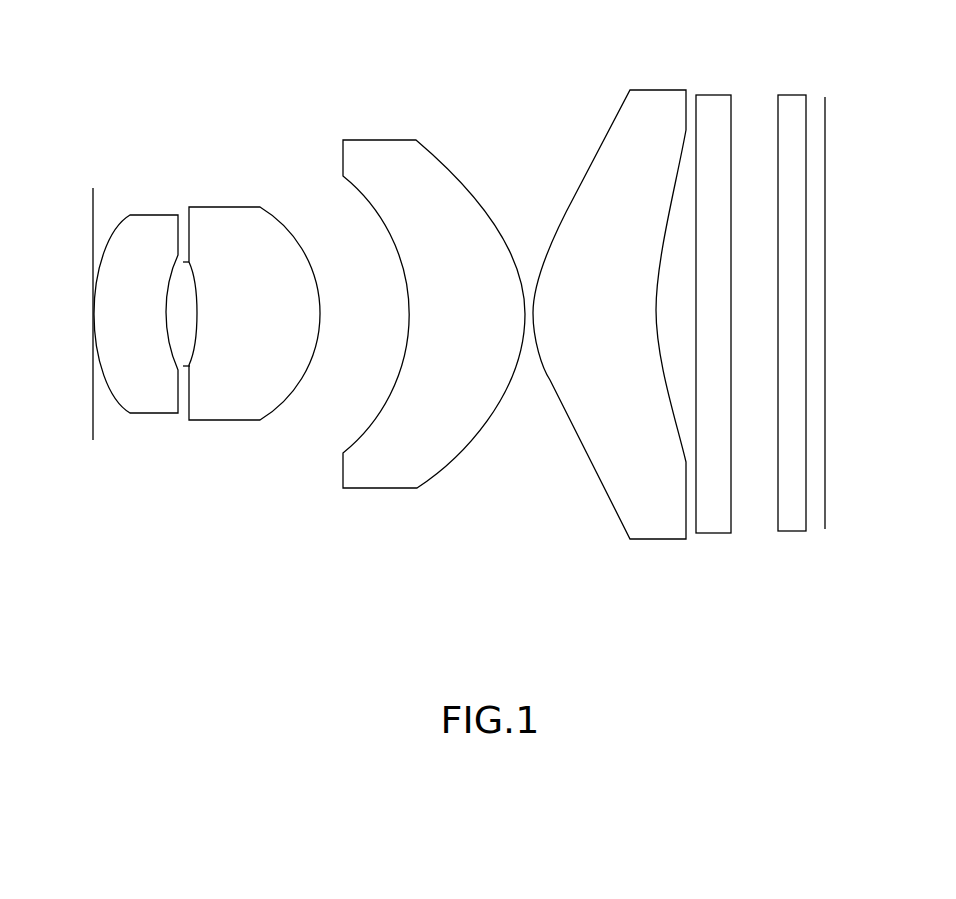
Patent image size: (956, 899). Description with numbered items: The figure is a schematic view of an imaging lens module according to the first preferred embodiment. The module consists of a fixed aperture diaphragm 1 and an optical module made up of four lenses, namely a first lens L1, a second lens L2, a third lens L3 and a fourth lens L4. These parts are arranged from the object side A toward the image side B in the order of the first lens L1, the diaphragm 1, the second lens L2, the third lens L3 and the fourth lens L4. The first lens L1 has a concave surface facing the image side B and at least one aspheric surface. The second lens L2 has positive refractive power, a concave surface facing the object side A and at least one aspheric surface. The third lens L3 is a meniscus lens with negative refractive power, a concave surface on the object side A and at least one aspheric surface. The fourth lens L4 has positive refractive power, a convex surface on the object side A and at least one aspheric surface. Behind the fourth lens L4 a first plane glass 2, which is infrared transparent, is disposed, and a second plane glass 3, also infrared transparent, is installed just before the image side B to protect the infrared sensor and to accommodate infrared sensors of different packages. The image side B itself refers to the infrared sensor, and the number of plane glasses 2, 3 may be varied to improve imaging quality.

The fixed aperture diaphragm 1 is at (182, 226).
The first lens L1 is at (158, 363).
The second lens L2 is at (248, 363).
The third lens L3 is at (397, 465).
The fourth lens L4 is at (656, 120).
The first plane glass 2 is at (710, 137).
The second plane glass 3 is at (797, 137).
The object side A is at (72, 314).
The image side B is at (838, 313).